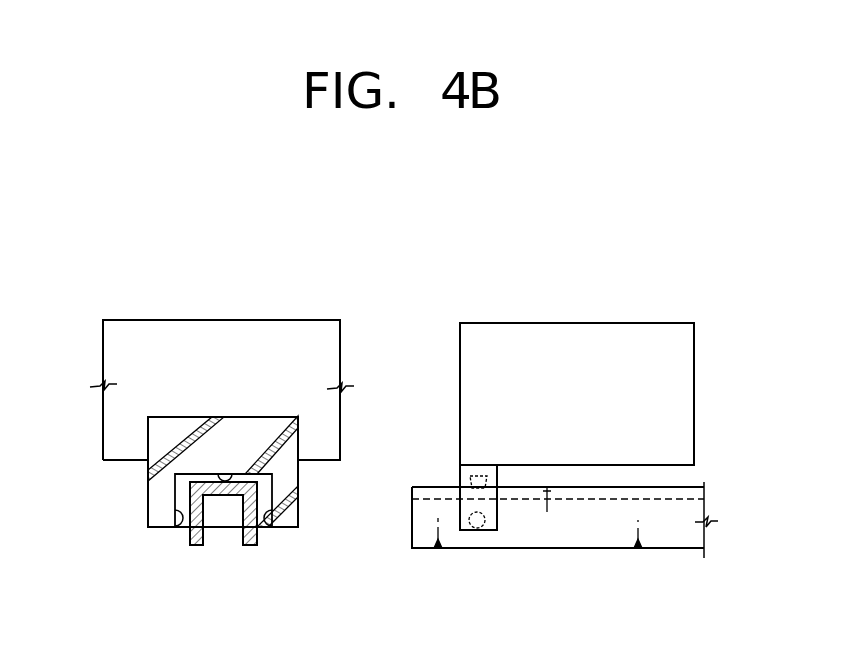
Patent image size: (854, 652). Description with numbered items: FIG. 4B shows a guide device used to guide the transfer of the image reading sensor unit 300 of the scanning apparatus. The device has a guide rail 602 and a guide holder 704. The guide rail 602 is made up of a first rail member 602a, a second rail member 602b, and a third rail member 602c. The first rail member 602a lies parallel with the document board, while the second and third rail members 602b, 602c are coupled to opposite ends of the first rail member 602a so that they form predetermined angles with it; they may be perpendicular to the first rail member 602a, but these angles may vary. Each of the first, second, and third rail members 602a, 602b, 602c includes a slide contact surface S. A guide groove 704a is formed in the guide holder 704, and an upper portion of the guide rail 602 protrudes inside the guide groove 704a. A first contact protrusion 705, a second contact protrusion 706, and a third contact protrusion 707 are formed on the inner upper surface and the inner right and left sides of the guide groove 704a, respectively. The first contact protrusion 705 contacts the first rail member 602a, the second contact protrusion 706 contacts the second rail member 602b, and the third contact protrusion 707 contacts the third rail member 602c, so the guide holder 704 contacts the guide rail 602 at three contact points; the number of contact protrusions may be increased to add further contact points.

The image reading sensor unit 300 is at (463, 322).
The guide holder 704 is at (455, 456).
The first contact protrusion 705 is at (235, 473).
The first rail member 602a is at (222, 470).
The guide groove 704a is at (176, 484).
The third contact protrusion 707 is at (173, 519).
The second contact protrusion 706 is at (470, 521).
The second rail member 602b is at (422, 505).
The third rail member 602c is at (187, 535).
The guide rail 602 is at (246, 546).
The slide contact surfaces S is at (708, 541).